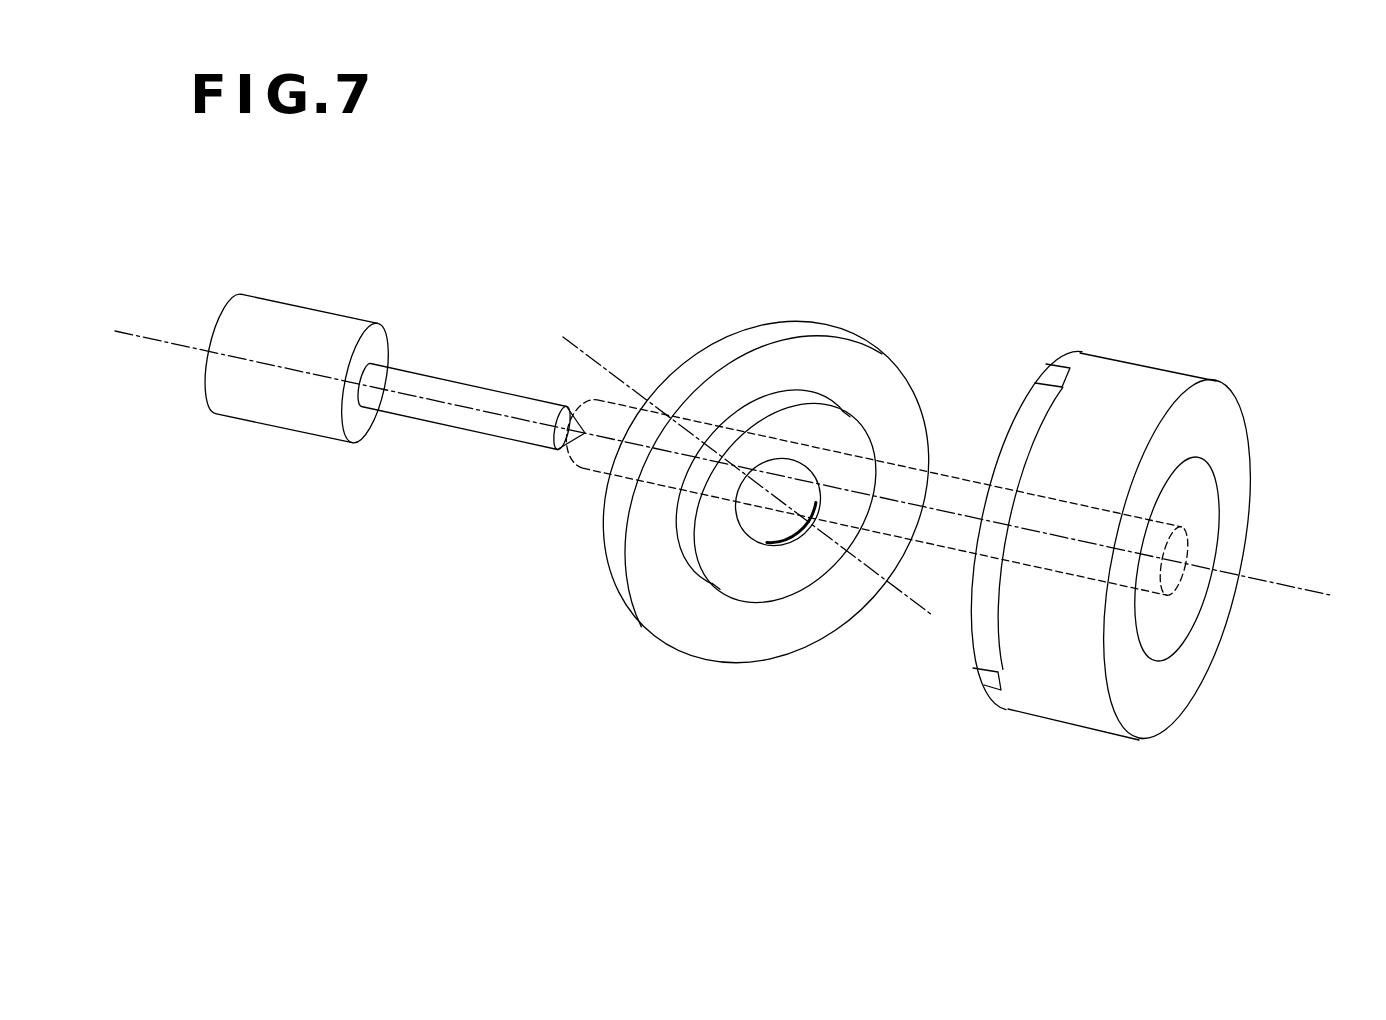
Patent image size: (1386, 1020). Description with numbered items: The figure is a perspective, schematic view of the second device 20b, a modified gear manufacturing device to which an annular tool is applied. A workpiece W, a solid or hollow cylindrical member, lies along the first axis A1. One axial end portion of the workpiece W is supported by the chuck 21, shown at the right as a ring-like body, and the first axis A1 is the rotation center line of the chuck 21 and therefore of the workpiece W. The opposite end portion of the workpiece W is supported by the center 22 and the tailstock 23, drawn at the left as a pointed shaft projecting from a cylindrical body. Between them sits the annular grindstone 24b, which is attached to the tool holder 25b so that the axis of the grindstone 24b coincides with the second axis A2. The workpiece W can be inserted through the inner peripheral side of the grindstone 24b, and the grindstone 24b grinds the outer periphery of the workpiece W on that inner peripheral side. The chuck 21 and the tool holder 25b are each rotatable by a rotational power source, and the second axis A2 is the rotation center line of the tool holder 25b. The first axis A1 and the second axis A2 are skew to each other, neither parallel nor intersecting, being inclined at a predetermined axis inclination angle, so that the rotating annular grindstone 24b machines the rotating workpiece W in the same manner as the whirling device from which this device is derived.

The second device 20b is at (1222, 189).
The chuck 21 is at (1132, 377).
The center 22 is at (460, 420).
The tailstock 23 is at (278, 415).
The annular grindstone 24b is at (747, 582).
The tool holder 25b is at (663, 597).
The workpiece W is at (955, 472).
The first axis A1 is at (737, 474).
The second axis A2 is at (736, 463).